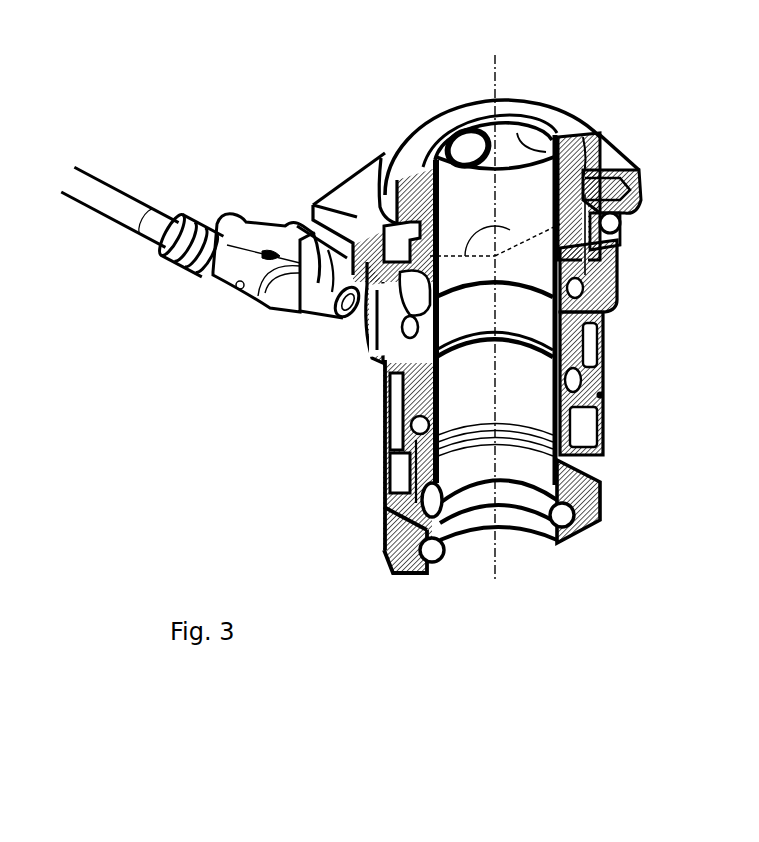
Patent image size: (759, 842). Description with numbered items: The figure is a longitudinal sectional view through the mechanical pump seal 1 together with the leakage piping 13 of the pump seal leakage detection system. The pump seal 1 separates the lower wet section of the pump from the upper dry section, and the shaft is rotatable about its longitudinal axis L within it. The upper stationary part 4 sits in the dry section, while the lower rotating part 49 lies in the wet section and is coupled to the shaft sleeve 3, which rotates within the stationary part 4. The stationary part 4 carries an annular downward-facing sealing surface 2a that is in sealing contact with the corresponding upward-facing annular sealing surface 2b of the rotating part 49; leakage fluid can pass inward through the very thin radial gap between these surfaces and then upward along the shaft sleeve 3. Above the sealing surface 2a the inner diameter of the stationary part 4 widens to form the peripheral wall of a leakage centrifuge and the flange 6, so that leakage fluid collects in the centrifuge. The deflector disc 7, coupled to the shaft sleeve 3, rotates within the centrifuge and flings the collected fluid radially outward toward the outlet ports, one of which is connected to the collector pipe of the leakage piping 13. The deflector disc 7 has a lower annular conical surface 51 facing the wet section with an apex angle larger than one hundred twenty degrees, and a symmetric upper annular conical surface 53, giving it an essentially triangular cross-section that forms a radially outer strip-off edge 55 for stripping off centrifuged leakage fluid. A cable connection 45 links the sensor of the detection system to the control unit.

The pump seal 1 is at (312, 393).
The leakage piping 13 is at (213, 299).
The cable connection 45 is at (133, 196).
The flange 6 is at (360, 184).
The deflector disc 7 is at (393, 234).
The shaft sleeve 3 is at (527, 126).
The upper annular conical surface 53 is at (563, 165).
The radially outer strip-off edge 55 is at (643, 180).
The lower annular conical surface 51 is at (578, 227).
The stationary part 4 is at (616, 242).
The upward-facing annular sealing surface 2b is at (622, 300).
The downward-facing sealing surface 2a is at (603, 367).
The lower rotating part 49 is at (607, 395).
The longitudinal axis L is at (493, 570).